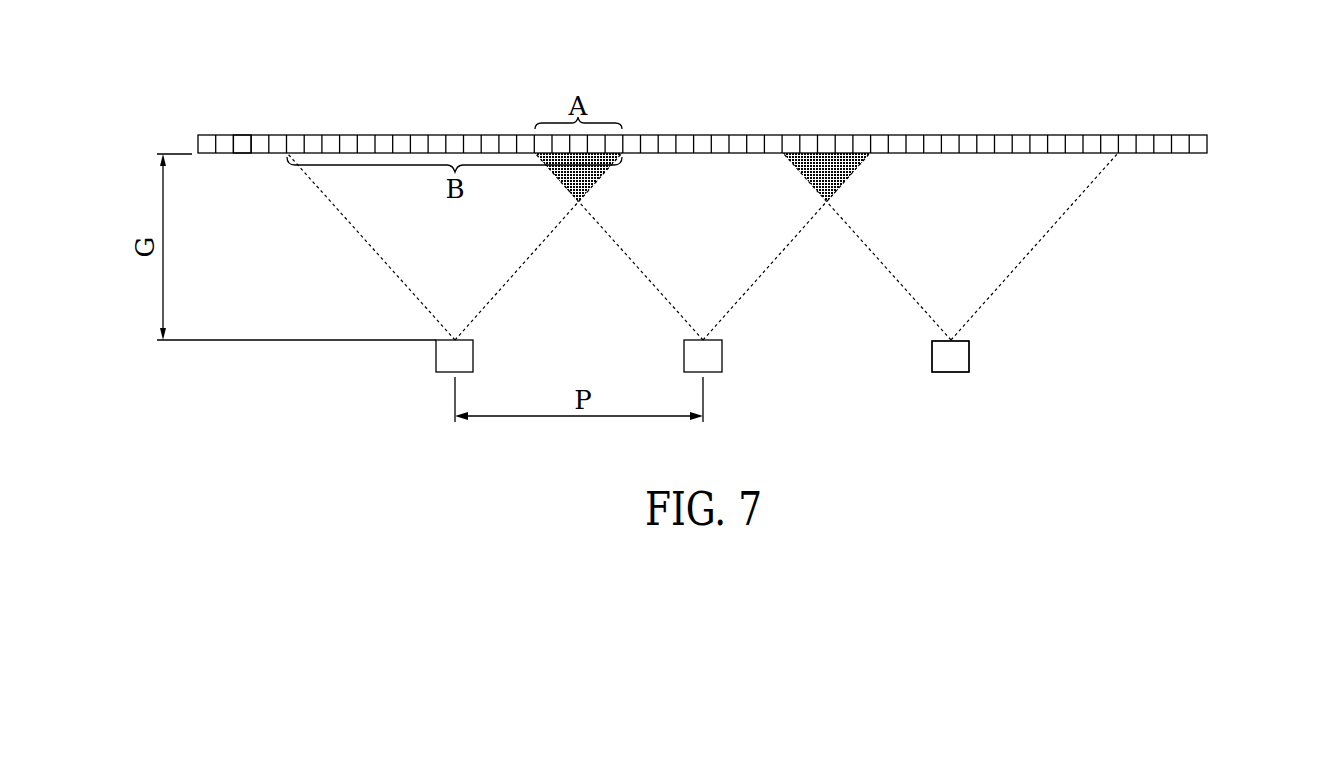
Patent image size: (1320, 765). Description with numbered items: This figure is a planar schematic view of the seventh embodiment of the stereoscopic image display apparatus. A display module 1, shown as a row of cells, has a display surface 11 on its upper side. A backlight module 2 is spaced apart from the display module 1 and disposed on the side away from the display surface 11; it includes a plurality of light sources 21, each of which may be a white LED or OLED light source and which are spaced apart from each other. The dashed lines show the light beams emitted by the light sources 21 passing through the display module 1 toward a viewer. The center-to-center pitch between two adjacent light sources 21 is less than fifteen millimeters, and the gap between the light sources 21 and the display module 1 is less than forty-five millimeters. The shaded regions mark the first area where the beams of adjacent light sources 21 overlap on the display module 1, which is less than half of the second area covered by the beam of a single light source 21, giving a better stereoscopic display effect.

The display module 1 is at (1214, 140).
The display surface 11 is at (241, 134).
The backlight module 2 is at (980, 350).
The light source 21 is at (955, 361).